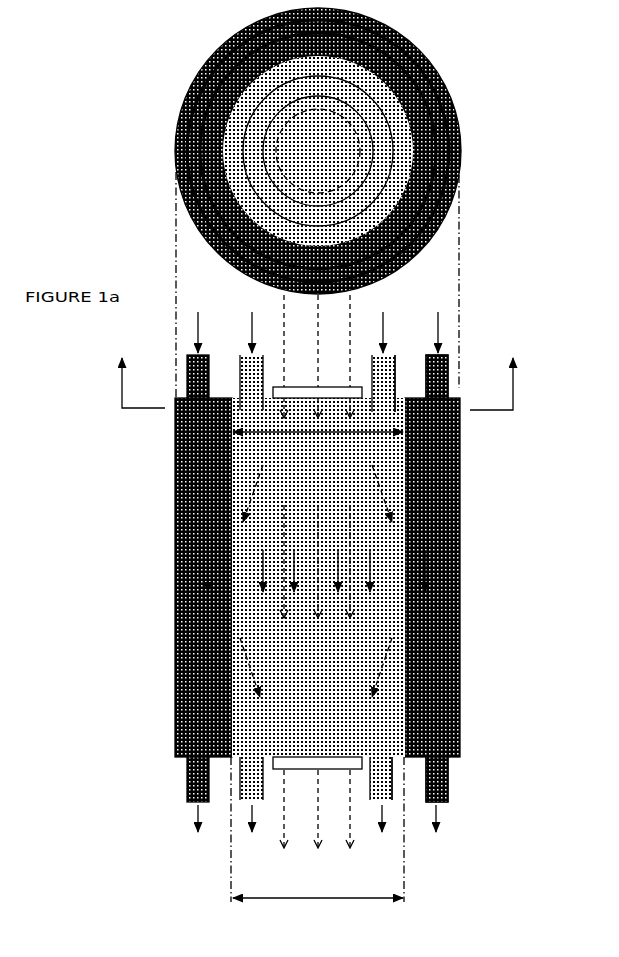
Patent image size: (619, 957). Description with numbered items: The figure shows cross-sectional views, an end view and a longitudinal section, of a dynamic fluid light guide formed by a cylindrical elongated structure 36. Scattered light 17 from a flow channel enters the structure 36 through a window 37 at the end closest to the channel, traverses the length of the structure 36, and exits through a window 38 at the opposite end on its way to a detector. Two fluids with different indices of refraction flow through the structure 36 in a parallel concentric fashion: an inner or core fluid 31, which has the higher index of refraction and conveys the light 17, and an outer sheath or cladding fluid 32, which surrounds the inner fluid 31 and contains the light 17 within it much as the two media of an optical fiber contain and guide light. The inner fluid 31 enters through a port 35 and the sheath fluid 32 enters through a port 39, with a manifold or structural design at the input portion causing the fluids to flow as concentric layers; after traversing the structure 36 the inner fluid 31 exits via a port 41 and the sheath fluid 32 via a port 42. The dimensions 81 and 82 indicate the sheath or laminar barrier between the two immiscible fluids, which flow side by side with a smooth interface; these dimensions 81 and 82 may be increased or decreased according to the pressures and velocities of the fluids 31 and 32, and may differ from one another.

The scattered light 17 is at (352, 300).
The inner fluid 31 is at (384, 320).
The sheath fluid 32 is at (438, 320).
The port 35 is at (395, 377).
The elongated structure 36 is at (352, 455).
The window 37 is at (306, 387).
The window 38 is at (325, 770).
The port 39 is at (450, 377).
The port 41 is at (397, 778).
The port 42 is at (450, 770).
The dimension 81 is at (265, 897).
The dimension 82 is at (275, 433).